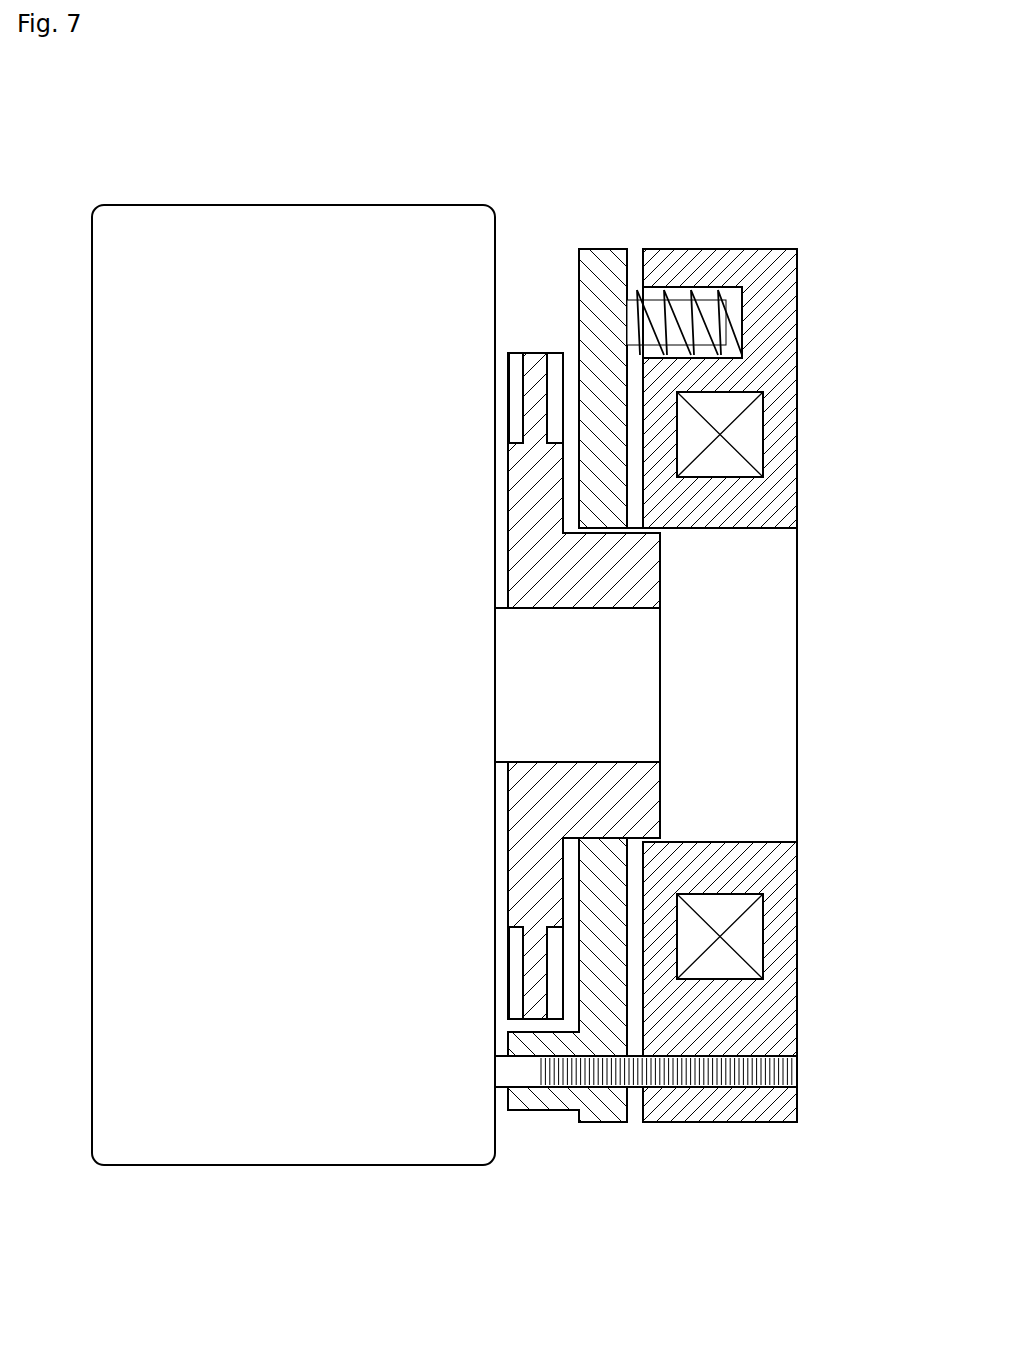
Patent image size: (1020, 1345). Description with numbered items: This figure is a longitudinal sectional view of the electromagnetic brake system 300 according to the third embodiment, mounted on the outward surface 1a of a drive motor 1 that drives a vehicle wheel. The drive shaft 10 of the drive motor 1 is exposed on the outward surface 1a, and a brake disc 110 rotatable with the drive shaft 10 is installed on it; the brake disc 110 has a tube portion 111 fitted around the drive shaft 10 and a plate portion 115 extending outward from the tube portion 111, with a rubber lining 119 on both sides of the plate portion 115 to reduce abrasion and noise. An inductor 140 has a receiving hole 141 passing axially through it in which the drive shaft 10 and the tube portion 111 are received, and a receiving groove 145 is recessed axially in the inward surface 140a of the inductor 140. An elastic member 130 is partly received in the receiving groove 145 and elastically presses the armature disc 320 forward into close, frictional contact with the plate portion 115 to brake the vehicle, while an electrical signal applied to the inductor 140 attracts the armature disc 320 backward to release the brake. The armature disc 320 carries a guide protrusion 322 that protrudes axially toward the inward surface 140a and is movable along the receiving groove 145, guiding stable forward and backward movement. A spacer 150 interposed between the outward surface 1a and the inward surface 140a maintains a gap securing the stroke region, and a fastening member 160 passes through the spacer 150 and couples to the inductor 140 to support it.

The drive motor 1 is at (103, 688).
The outward surface of the drive motor 1a is at (498, 238).
The electromagnetic brake system 300 is at (780, 163).
The armature disc 320 is at (597, 249).
The inward surface of the inductor 140a is at (636, 278).
The guide protrusion 322 is at (703, 293).
The lining 119 is at (553, 352).
The elastic member 130 is at (735, 330).
The receiving groove 145 is at (743, 353).
The inductor 140 is at (793, 505).
The plate portion 115 is at (565, 482).
The tube portion 111 is at (655, 582).
The brake disc 110 is at (877, 585).
The drive shaft 10 is at (645, 698).
The receiving hole 141 is at (748, 748).
The fastening member 160 is at (525, 1075).
The spacer 150 is at (596, 1103).